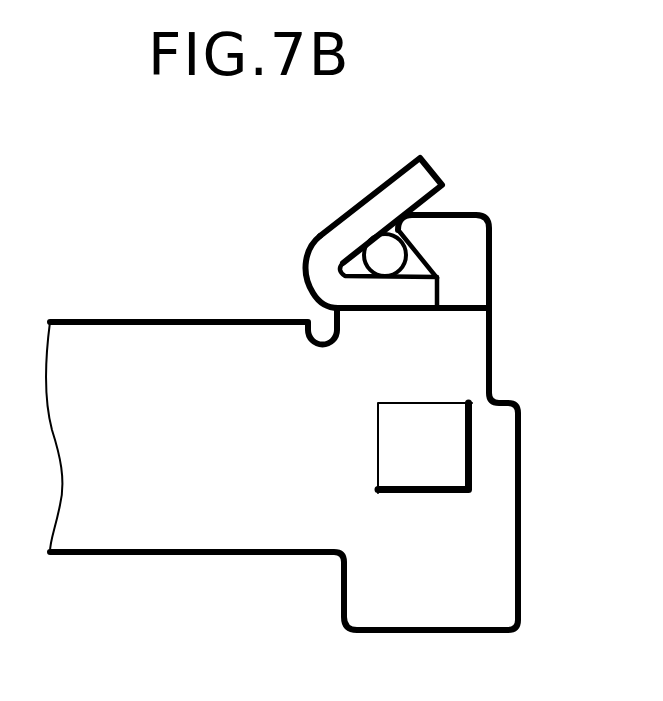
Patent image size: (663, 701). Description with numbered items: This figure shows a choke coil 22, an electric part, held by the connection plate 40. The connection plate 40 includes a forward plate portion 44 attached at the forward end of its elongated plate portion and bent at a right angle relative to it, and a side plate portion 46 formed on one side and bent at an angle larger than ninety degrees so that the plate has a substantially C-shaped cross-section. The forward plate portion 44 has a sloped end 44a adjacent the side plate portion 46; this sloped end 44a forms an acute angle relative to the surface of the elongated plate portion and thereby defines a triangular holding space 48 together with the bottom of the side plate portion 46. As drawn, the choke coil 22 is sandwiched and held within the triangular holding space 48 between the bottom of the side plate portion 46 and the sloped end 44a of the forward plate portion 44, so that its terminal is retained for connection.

The choke coil 22 is at (380, 250).
The connection plate 40 is at (538, 469).
The forward plate portion 44 is at (481, 261).
The sloped end 44a is at (418, 261).
The side plate portion 46 is at (318, 233).
The triangular holding space 48 is at (350, 272).